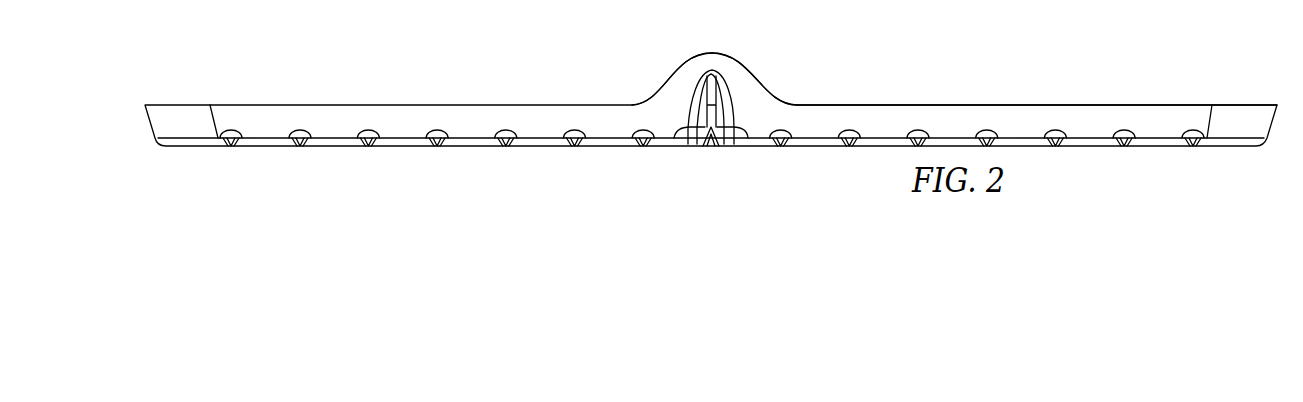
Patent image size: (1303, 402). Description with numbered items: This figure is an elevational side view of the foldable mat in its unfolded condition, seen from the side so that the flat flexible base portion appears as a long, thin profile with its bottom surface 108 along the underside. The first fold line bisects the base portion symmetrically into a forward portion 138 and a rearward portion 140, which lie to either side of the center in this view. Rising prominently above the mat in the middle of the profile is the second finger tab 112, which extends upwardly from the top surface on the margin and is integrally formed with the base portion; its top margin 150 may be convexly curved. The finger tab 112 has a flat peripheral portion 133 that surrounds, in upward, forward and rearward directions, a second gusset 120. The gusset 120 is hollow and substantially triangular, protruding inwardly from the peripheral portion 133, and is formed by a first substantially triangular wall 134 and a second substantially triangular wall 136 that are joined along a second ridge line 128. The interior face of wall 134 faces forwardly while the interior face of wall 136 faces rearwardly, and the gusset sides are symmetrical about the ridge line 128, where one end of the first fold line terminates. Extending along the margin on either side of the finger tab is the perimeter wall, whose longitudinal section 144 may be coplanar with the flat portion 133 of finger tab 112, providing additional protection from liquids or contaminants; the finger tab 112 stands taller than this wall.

The bottom surface 108 is at (323, 150).
The second finger tab 112 is at (736, 56).
The second gusset 120 is at (708, 73).
The second ridge line 128 is at (710, 141).
The peripheral portion 133 is at (685, 77).
The first substantially triangular wall 134 is at (678, 141).
The second substantially triangular wall 136 is at (745, 140).
The forward portion 138 is at (252, 150).
The rearward portion 140 is at (1157, 148).
The longitudinal section of wall 144 is at (1052, 112).
The top margin 150 is at (678, 64).